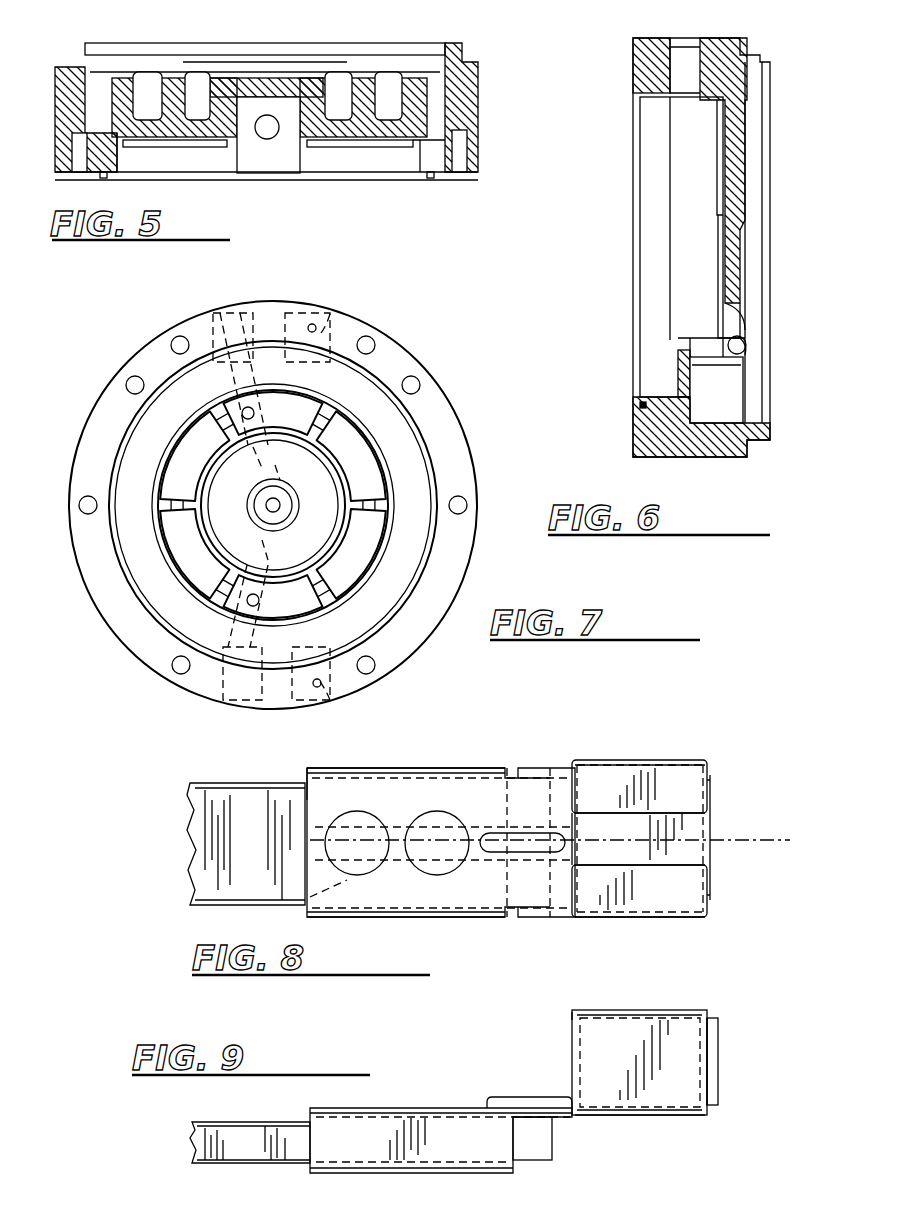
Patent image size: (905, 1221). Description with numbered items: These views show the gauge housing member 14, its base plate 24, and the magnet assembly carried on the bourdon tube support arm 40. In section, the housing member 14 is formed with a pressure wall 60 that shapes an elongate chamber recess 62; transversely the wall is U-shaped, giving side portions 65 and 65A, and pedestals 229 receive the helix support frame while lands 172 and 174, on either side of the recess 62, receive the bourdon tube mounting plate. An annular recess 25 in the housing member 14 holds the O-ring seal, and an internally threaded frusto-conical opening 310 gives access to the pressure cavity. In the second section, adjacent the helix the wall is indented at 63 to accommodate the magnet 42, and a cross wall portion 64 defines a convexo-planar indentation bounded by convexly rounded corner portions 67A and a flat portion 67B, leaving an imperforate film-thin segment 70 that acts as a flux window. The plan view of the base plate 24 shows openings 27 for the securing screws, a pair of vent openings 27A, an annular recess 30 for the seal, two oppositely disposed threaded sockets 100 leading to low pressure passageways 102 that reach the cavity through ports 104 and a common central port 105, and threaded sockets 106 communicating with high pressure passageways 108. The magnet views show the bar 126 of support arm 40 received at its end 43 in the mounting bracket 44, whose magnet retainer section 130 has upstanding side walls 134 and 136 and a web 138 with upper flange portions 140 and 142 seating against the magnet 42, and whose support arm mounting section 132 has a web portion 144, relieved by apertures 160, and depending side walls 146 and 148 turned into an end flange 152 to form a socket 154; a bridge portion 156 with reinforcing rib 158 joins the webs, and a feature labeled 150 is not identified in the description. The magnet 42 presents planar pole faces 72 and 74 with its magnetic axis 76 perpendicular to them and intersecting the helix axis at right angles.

In FIG. 5, the housing member 14 is at (478, 90).
In FIG. 6, the housing member 14 is at (720, 38).
In FIG. 7, the base plate 24 is at (425, 350).
In FIG. 5, the annular recess 25 is at (430, 178).
In FIG. 6, the annular recess 25 is at (640, 405).
In FIG. 7, the openings 27 is at (176, 340).
In FIG. 7, the vent openings 27A is at (130, 380).
In FIG. 7, the annular recess 30 is at (427, 455).
In FIG. 9, the support arm 40 is at (232, 1123).
In FIG. 9, the magnet 42 is at (728, 1015).
In FIG. 9, the end 43 is at (535, 1152).
In FIG. 8, the magnet mounting bracket 44 is at (598, 748).
In FIG. 9, the magnet mounting bracket 44 is at (718, 988).
In FIG. 5, the pressure wall 60 is at (275, 76).
In FIG. 6, the pressure wall 60 is at (716, 202).
In FIG. 5, the chamber portion or recess 62 is at (307, 105).
In FIG. 6, the chamber portion or recess 62 is at (690, 258).
In FIG. 6, the indentation 63 is at (748, 350).
In FIG. 6, the cross wall portion 64 is at (700, 345).
In FIG. 5, the side portion 65 is at (243, 112).
In FIG. 5, the side portion 65A is at (273, 136).
In FIG. 6, the side portion 65A is at (690, 152).
In FIG. 6, the convexly rounded corner portions 67A is at (740, 340).
In FIG. 6, the flat or planar portion 67B is at (735, 330).
In FIG. 6, the imperforate segment 70 is at (722, 362).
In FIG. 8, the pole face 72 is at (712, 878).
In FIG. 9, the pole face 72 is at (718, 1052).
In FIG. 8, the pole face 74 is at (573, 862).
In FIG. 8, the magnetic axis 76 is at (758, 838).
In FIG. 7, the threaded sockets 100 is at (222, 313).
In FIG. 7, the low pressure passageway 102 is at (262, 470).
In FIG. 7, the ports 104 is at (255, 413).
In FIG. 7, the common central port 105 is at (280, 500).
In FIG. 7, the threaded sockets 106 is at (325, 312).
In FIG. 7, the high pressure passageways 108 is at (310, 322).
In FIG. 9, the bar 126 is at (222, 1152).
In FIG. 8, the magnet retainer section 130 is at (705, 752).
In FIG. 8, the support arm mounting section 132 is at (463, 766).
In FIG. 8, the side wall 134 is at (660, 762).
In FIG. 8, the side wall 136 is at (645, 917).
In FIG. 9, the side wall 136 is at (645, 1030).
In FIG. 9, the web 138 is at (665, 1118).
In FIG. 8, the upper flange portion 140 is at (690, 795).
In FIG. 8, the upper flange portion 142 is at (690, 895).
In FIG. 9, the upper flange portion 142 is at (590, 1012).
In FIG. 8, the web portion 144 is at (395, 800).
In FIG. 9, the web portion 144 is at (390, 1110).
In FIG. 8, the side wall 146 is at (380, 745).
In FIG. 8, the side wall 148 is at (448, 918).
In FIG. 9, the side wall 148 is at (445, 1138).
In FIG. 8, the corner 150 is at (322, 810).
In FIG. 8, the end flange 152 is at (300, 908).
In FIG. 8, the socket 154 is at (305, 855).
In FIG. 9, the socket 154 is at (372, 1170).
In FIG. 8, the bridge portion 156 is at (535, 797).
In FIG. 8, the reinforcing rib 158 is at (510, 848).
In FIG. 9, the reinforcing rib 158 is at (530, 1097).
In FIG. 8, the apertures 160 is at (416, 864).
In FIG. 5, the land 172 is at (187, 148).
In FIG. 5, the land 174 is at (358, 148).
In FIG. 5, the pedestals 229 is at (165, 75).
In FIG. 6, the internally threaded opening 310 is at (688, 47).